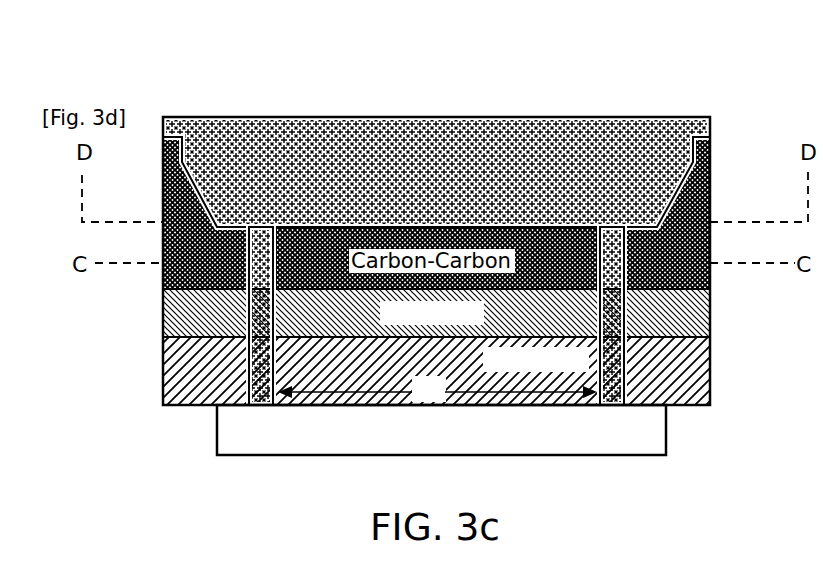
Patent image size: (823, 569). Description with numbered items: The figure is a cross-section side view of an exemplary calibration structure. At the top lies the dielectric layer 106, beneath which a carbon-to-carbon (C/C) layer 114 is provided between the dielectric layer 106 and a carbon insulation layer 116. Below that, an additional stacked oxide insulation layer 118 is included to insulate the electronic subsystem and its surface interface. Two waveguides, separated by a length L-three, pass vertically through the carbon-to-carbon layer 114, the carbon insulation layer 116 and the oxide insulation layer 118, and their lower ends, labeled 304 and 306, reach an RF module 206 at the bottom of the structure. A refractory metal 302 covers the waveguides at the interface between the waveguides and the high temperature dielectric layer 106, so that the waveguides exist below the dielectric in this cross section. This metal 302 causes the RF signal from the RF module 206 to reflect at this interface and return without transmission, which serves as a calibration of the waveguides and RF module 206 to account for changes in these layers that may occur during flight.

The dielectric layer 106 is at (711, 128).
The carbon-to-carbon (C/C) layer 114 is at (711, 191).
The carbon insulation layer 116 is at (711, 312).
The oxide insulation layer 118 is at (711, 353).
The metal 302 is at (436, 229).
The left via connection 304 is at (246, 362).
The right via connection 306 is at (628, 392).
The RF module 206 is at (667, 428).